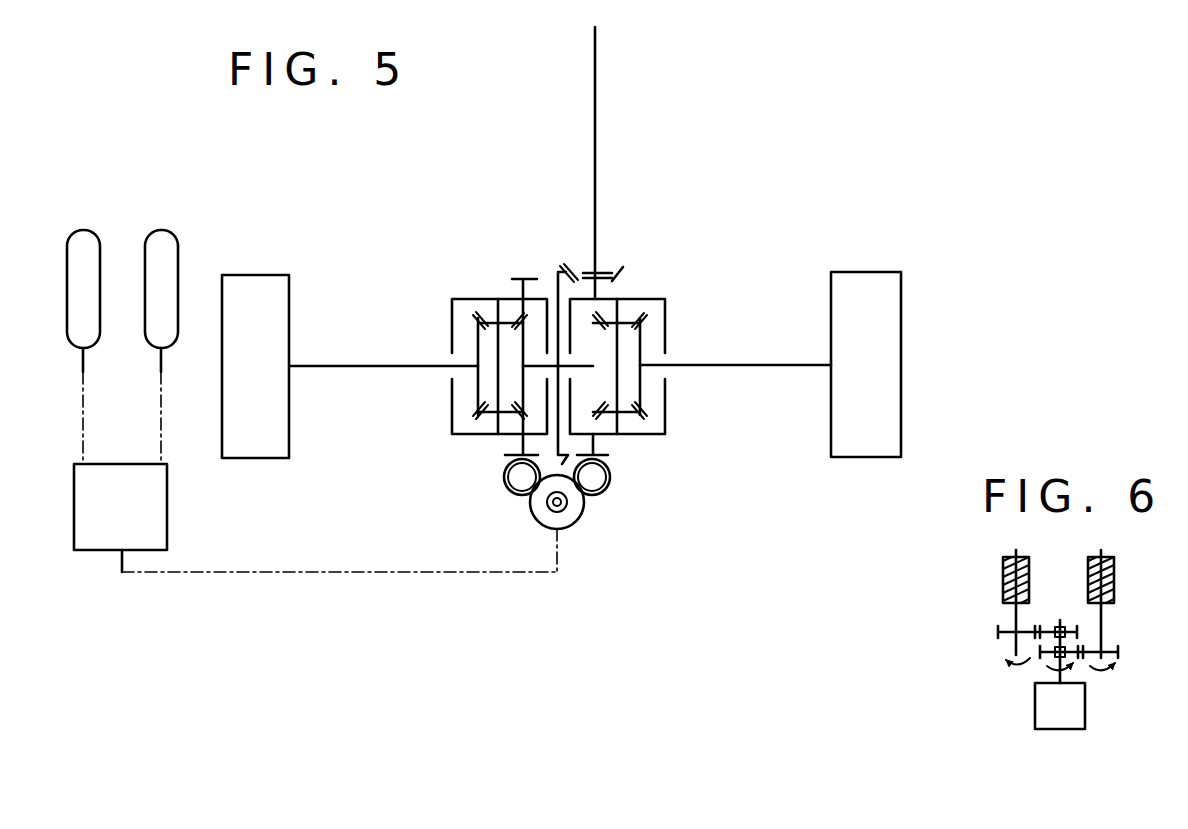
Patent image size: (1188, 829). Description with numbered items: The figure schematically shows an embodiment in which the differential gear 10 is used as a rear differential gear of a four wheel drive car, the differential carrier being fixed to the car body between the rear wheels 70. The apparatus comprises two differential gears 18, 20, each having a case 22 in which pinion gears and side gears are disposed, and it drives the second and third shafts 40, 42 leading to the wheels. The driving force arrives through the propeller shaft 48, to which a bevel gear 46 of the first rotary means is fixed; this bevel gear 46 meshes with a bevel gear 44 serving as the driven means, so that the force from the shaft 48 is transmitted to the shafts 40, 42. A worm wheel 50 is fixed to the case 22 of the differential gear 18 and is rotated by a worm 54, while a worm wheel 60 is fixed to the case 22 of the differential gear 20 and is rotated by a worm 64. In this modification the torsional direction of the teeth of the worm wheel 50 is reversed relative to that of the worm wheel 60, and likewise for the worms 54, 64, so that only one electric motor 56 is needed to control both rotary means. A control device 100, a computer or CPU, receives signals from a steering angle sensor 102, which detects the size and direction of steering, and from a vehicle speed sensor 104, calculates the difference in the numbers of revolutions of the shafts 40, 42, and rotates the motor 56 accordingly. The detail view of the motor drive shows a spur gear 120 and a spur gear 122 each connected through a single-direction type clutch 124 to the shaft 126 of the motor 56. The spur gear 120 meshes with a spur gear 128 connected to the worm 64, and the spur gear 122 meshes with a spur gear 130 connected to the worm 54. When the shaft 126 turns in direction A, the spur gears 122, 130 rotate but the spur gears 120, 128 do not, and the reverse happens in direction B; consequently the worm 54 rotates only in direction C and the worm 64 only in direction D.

In FIG. 5, the differential gear 10 is at (560, 246).
In FIG. 5, the differential gear 18 is at (482, 327).
In FIG. 5, the differential gear 20 is at (638, 336).
In FIG. 5, the case 22 is at (455, 298).
In FIG. 5, the second shaft 40 is at (343, 366).
In FIG. 5, the third shaft 42 is at (740, 364).
In FIG. 5, the bevel gear 44 is at (560, 269).
In FIG. 5, the bevel gear 46 is at (607, 271).
In FIG. 5, the shaft 48 is at (597, 123).
In FIG. 5, the worm wheel 50 is at (514, 279).
In FIG. 5, the worm 54 is at (504, 477).
In FIG. 6, the worm 54 is at (1003, 575).
In FIG. 5, the electric motor 56 is at (584, 516).
In FIG. 6, the electric motor 56 is at (1086, 722).
In FIG. 5, the worm wheel 60 is at (586, 272).
In FIG. 5, the worm 64 is at (610, 477).
In FIG. 6, the worm 64 is at (1114, 570).
In FIG. 5, the rear wheels 70 is at (268, 275).
In FIG. 5, the control device 100 is at (168, 512).
In FIG. 5, the steering angle sensor 102 is at (87, 229).
In FIG. 5, the vehicle speed sensor 104 is at (165, 229).
In FIG. 6, the spur gear 120 is at (1045, 653).
In FIG. 6, the spur gear 122 is at (1065, 628).
In FIG. 6, the single-direction type clutch 124 is at (1058, 625).
In FIG. 6, the shaft 126 is at (1063, 643).
In FIG. 6, the spur gear 128 is at (1106, 662).
In FIG. 6, the spur gear 130 is at (1005, 625).
In FIG. 6, the direction A is at (1068, 666).
In FIG. 6, the direction B is at (1085, 692).
In FIG. 6, the direction C is at (1004, 661).
In FIG. 6, the direction D is at (1115, 684).